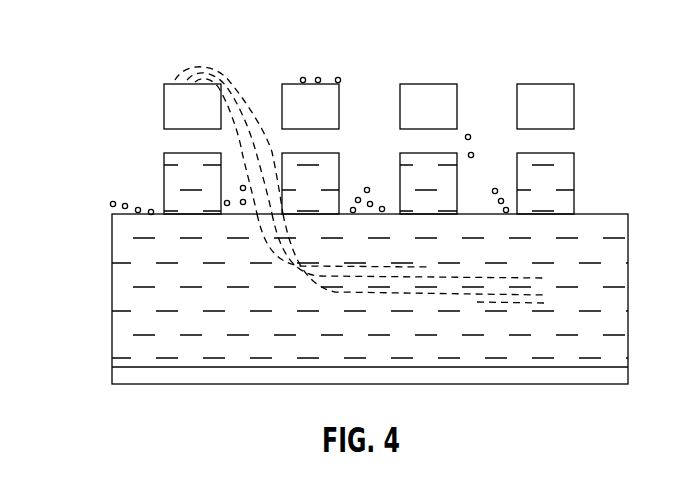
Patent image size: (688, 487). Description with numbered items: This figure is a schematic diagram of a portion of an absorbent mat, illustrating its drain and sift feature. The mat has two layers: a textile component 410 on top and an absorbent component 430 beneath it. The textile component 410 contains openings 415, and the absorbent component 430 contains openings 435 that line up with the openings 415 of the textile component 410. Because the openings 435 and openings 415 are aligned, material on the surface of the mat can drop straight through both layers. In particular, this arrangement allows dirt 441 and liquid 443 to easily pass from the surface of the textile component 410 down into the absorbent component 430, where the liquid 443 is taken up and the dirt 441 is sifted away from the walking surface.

The textile component 410 is at (164, 106).
The openings of textile component 415 is at (378, 92).
The absorbent component 430 is at (112, 239).
The openings of absorbent component 435 is at (370, 216).
The dirt 441 is at (303, 78).
The liquid 443 is at (234, 132).